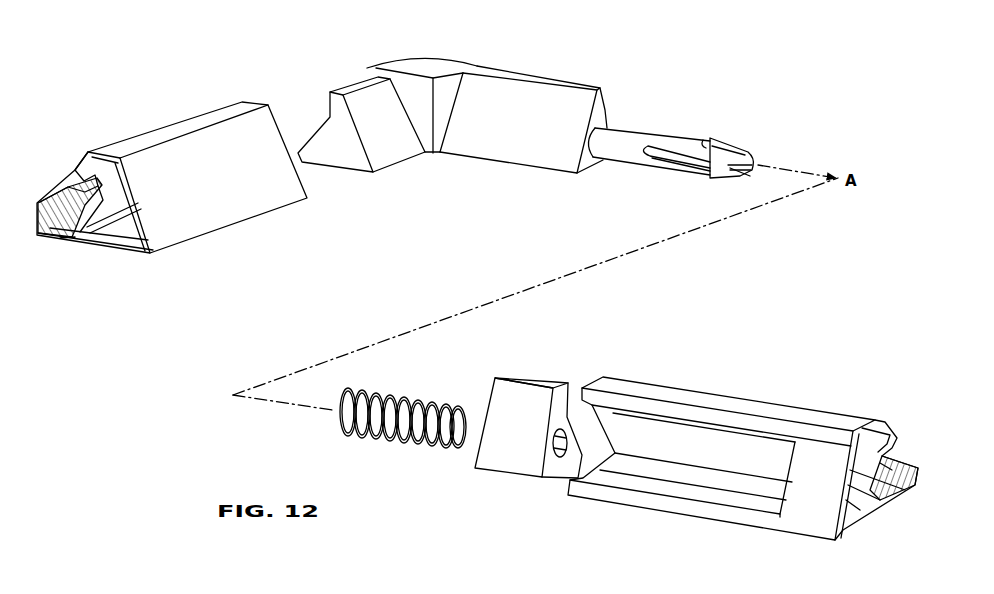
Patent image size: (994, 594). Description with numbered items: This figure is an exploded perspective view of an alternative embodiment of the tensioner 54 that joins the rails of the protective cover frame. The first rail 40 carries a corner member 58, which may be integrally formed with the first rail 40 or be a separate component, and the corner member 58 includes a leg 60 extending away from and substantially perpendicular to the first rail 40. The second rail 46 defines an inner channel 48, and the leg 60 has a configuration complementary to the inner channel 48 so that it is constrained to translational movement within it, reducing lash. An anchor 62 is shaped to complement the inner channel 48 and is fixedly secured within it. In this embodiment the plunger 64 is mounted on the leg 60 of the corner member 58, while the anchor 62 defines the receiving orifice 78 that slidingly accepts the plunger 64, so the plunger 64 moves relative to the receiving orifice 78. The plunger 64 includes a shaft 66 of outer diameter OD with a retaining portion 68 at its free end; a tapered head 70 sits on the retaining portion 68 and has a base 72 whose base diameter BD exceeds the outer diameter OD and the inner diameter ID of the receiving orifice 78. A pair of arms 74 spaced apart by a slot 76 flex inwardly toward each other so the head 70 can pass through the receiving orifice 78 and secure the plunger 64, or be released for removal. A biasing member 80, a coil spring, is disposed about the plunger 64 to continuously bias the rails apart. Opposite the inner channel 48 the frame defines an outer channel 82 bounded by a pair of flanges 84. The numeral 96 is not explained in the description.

The first rail 40 is at (175, 128).
The second rail 46 is at (852, 422).
The inner channel 48 is at (752, 493).
The tensioner 54 is at (748, 66).
The corner member 58 is at (425, 65).
The leg 60 is at (495, 87).
The anchor 62 is at (525, 390).
The plunger 64 is at (676, 124).
The shaft 66 is at (630, 137).
The retaining portion 68 is at (760, 130).
The head 70 is at (735, 157).
The base 72 is at (705, 145).
The arms 74 is at (665, 145).
The slot 76 is at (690, 158).
The receiving orifice 78 is at (562, 446).
The biasing member 80 is at (453, 452).
The outer channel 82 is at (83, 238).
The flanges 84 is at (40, 203).
The tip groove 96 is at (754, 184).